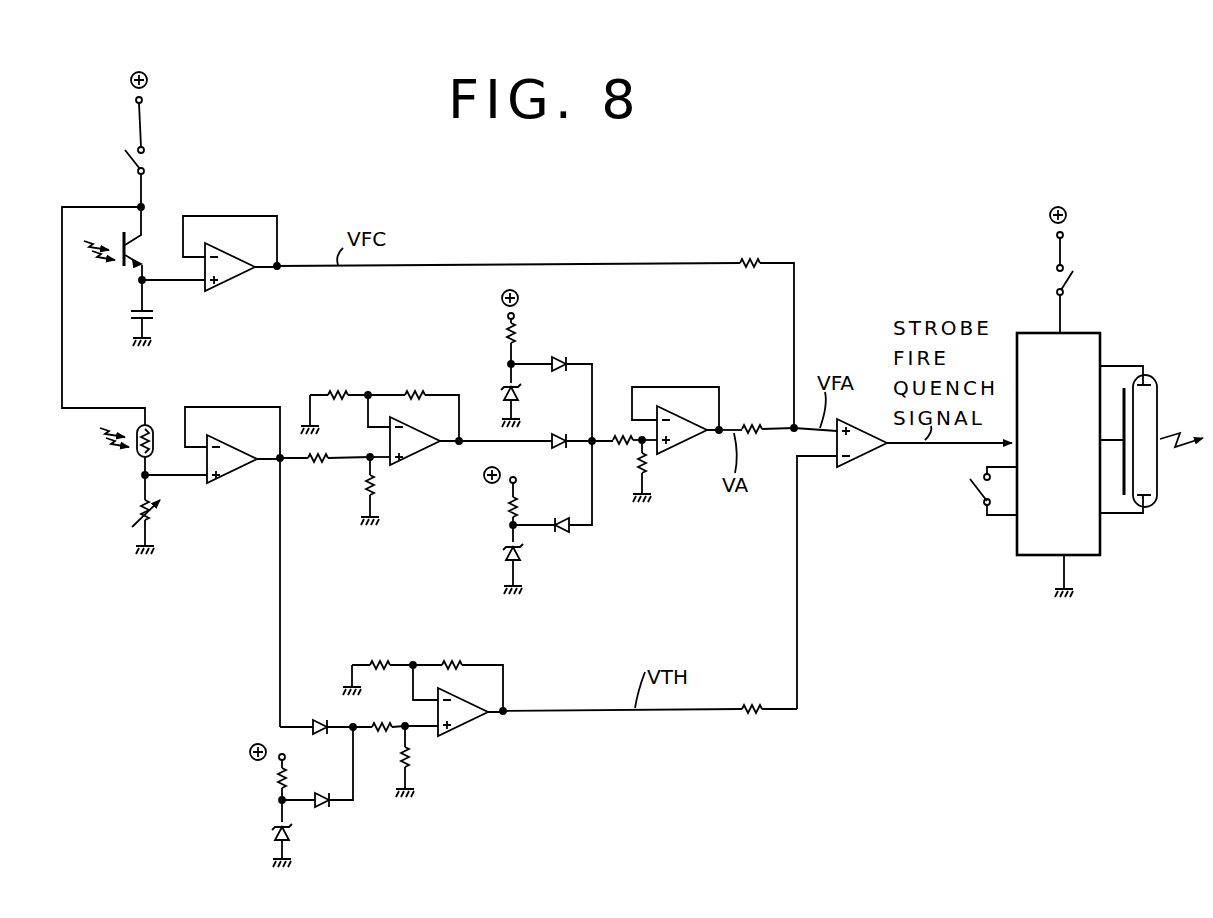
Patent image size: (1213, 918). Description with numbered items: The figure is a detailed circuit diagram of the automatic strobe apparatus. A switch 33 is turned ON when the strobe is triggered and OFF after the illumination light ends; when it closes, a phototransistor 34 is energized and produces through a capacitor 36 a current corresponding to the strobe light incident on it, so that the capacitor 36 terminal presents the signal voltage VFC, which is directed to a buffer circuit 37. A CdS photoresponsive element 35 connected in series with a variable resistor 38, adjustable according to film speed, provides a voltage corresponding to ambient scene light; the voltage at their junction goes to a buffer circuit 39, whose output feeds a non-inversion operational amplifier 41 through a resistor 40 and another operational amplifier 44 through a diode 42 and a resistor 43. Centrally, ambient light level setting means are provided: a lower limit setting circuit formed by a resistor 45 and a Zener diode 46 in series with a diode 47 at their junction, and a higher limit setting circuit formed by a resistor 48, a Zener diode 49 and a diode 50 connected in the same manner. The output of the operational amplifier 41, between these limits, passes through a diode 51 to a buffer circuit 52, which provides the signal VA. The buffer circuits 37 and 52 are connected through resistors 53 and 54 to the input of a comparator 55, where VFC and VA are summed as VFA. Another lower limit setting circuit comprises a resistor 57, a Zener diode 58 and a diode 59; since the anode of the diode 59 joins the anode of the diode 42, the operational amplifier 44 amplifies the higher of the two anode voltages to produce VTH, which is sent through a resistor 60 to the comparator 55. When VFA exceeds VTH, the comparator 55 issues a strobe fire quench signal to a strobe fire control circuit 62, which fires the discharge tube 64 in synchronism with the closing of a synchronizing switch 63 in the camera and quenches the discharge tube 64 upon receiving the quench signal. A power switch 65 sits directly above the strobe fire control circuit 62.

The switch 33 is at (127, 160).
The phototransistor 34 is at (130, 263).
The photoresponsive element 35 is at (137, 450).
The capacitor 36 is at (157, 315).
The buffer circuit 37 is at (233, 281).
The variable resistor 38 is at (157, 517).
The buffer circuit 39 is at (233, 473).
The resistor 40 is at (321, 463).
The operational amplifier 41 is at (421, 456).
The diode 42 is at (318, 722).
The resistor 43 is at (387, 722).
The operational amplifier 44 is at (466, 737).
The resistor 45 is at (505, 336).
The Zener diode 46 is at (521, 392).
The diode 47 is at (560, 356).
The resistor 48 is at (507, 500).
The Zener diode 49 is at (505, 551).
The diode 50 is at (566, 534).
The diode 51 is at (558, 449).
The buffer circuit 52 is at (673, 455).
The resistor 53 is at (751, 257).
The resistor 54 is at (755, 421).
The comparator 55 is at (860, 456).
The resistor 57 is at (275, 778).
The Zener diode 58 is at (272, 830).
The diode 59 is at (321, 808).
The resistor 60 is at (748, 715).
The strobe fire control circuit 62 is at (1017, 541).
The synchronizing switch 63 is at (980, 491).
The discharge tube 64 is at (1157, 407).
The power switch 65 is at (1072, 273).